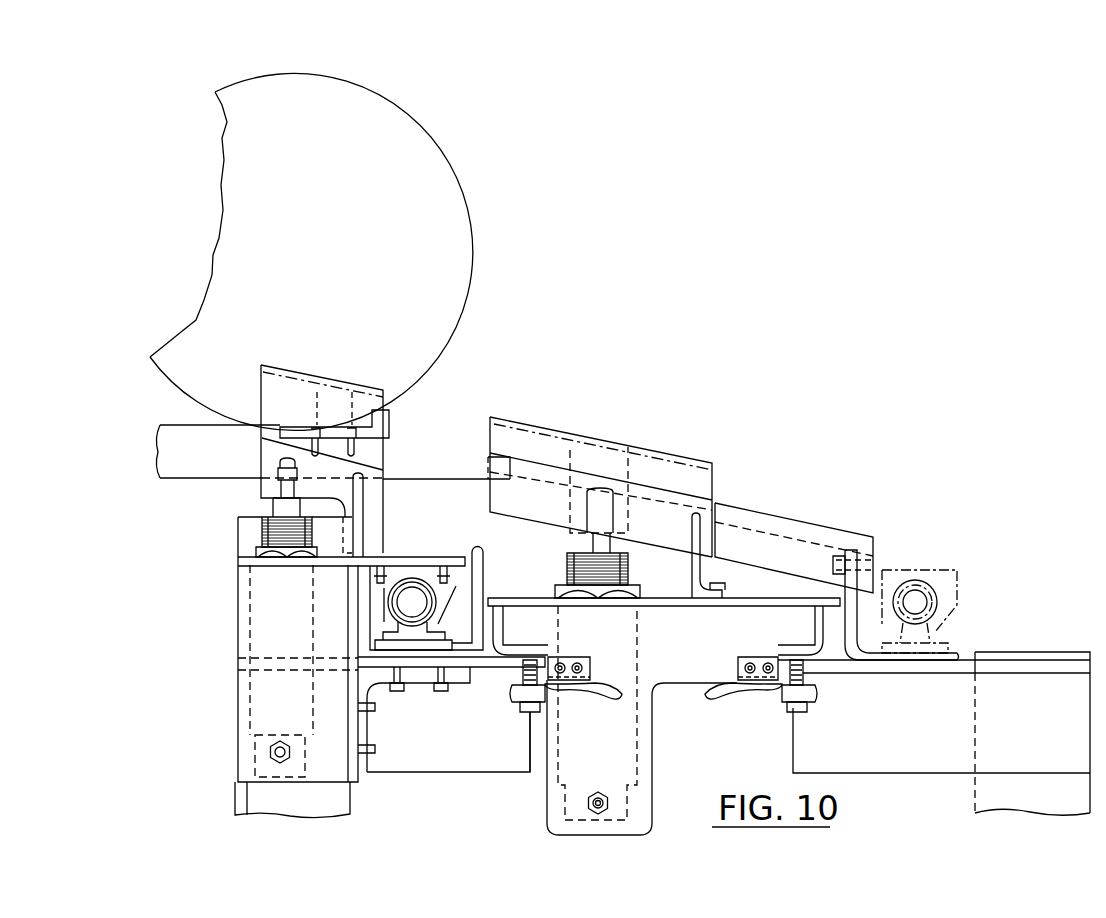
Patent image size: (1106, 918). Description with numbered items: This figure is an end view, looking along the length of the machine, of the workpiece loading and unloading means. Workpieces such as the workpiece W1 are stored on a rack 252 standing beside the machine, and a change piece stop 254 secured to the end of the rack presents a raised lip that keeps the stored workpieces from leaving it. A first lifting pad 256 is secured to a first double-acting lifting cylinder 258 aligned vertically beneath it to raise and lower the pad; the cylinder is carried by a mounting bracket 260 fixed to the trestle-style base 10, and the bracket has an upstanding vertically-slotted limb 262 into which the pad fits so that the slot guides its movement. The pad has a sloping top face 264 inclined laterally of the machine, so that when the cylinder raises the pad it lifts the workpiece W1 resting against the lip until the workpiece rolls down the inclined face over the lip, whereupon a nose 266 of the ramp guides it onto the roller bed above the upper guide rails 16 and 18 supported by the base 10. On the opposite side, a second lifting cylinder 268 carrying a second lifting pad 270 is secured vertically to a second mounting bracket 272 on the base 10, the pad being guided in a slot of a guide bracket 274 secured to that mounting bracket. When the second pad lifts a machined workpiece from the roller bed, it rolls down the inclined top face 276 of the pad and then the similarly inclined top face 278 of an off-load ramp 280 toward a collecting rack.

The workpiece W1 is at (471, 281).
The base 10 is at (428, 745).
The guide rail 16 is at (920, 606).
The guide rail 18 is at (415, 603).
The rack 252 is at (187, 450).
The change piece stop 254 is at (378, 422).
The first lifting pad 256 is at (268, 458).
The first double-acting lifting cylinder 258 is at (265, 531).
The mounting bracket 260 is at (267, 560).
The upstanding vertically-slotted limb 262 is at (352, 492).
The sloping top face 264 is at (373, 457).
The nose of the ramp 266 is at (476, 458).
The second lifting cylinder 268 is at (580, 570).
The second lifting pad 270 is at (507, 497).
The second mounting bracket 272 is at (678, 664).
The guide bracket 274 is at (693, 570).
The inclined top face 276 is at (683, 492).
The inclined top face 278 is at (812, 523).
The off-load ramp 280 is at (827, 540).